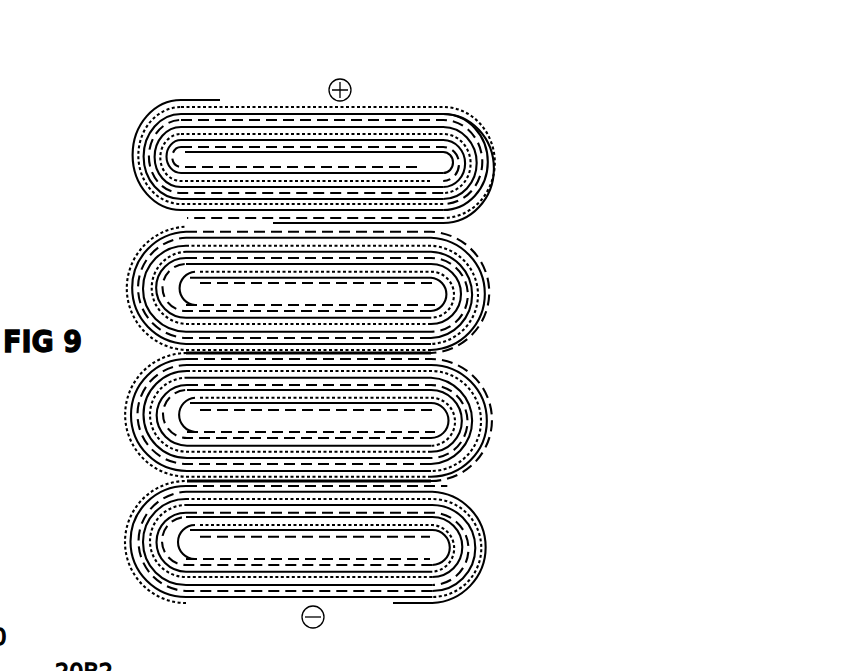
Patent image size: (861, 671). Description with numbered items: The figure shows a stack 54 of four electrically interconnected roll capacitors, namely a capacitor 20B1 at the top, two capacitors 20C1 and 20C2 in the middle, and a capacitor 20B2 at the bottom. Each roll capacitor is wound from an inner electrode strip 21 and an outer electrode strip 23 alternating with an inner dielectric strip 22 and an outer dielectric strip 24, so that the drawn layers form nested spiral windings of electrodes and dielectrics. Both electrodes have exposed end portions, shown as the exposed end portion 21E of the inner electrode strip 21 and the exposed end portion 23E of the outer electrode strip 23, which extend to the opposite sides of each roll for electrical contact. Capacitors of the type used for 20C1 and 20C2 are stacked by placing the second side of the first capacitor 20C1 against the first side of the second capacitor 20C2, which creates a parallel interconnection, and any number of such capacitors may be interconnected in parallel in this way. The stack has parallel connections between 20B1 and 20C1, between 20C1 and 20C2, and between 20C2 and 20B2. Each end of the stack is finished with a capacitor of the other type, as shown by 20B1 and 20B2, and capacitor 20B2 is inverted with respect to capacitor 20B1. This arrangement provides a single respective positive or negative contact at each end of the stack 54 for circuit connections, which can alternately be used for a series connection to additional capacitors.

The stack 54 is at (486, 84).
The roll capacitor 20B1 is at (512, 127).
The first capacitor 20C1 is at (366, 292).
The second capacitor 20C2 is at (365, 420).
The roll capacitor 20B2 is at (366, 541).
The inner electrode strip 21 is at (257, 122).
The exposed end portion 21E is at (493, 303).
The inner dielectric strip 22 is at (298, 114).
The outer electrode strip 23 is at (135, 178).
The exposed end portion 23E is at (370, 107).
The outer dielectric strip 24 is at (199, 100).